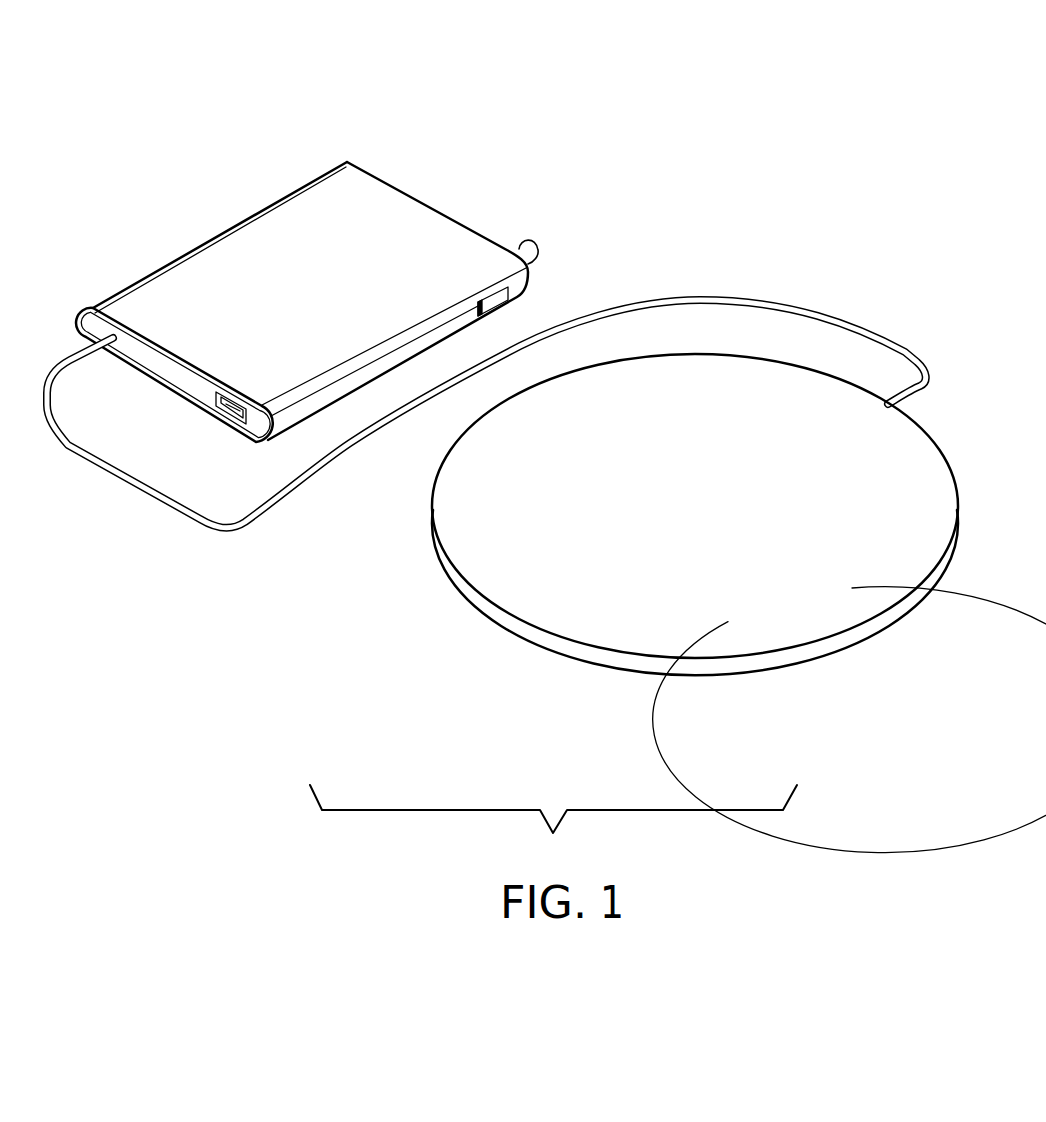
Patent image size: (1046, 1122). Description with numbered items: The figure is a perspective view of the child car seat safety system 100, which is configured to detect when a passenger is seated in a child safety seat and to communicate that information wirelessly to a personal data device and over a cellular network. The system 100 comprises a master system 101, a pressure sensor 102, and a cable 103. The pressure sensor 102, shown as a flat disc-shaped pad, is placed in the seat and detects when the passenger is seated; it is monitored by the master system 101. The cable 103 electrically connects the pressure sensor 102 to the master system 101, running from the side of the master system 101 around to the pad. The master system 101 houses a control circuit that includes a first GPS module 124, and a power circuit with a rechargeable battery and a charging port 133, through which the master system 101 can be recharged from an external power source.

The child car seat safety system 100 is at (546, 433).
The master system 101 is at (340, 210).
The pressure sensor 102 is at (704, 380).
The cable 103 is at (264, 508).
The first GPS module 124 is at (525, 246).
The charging port 133 is at (233, 412).